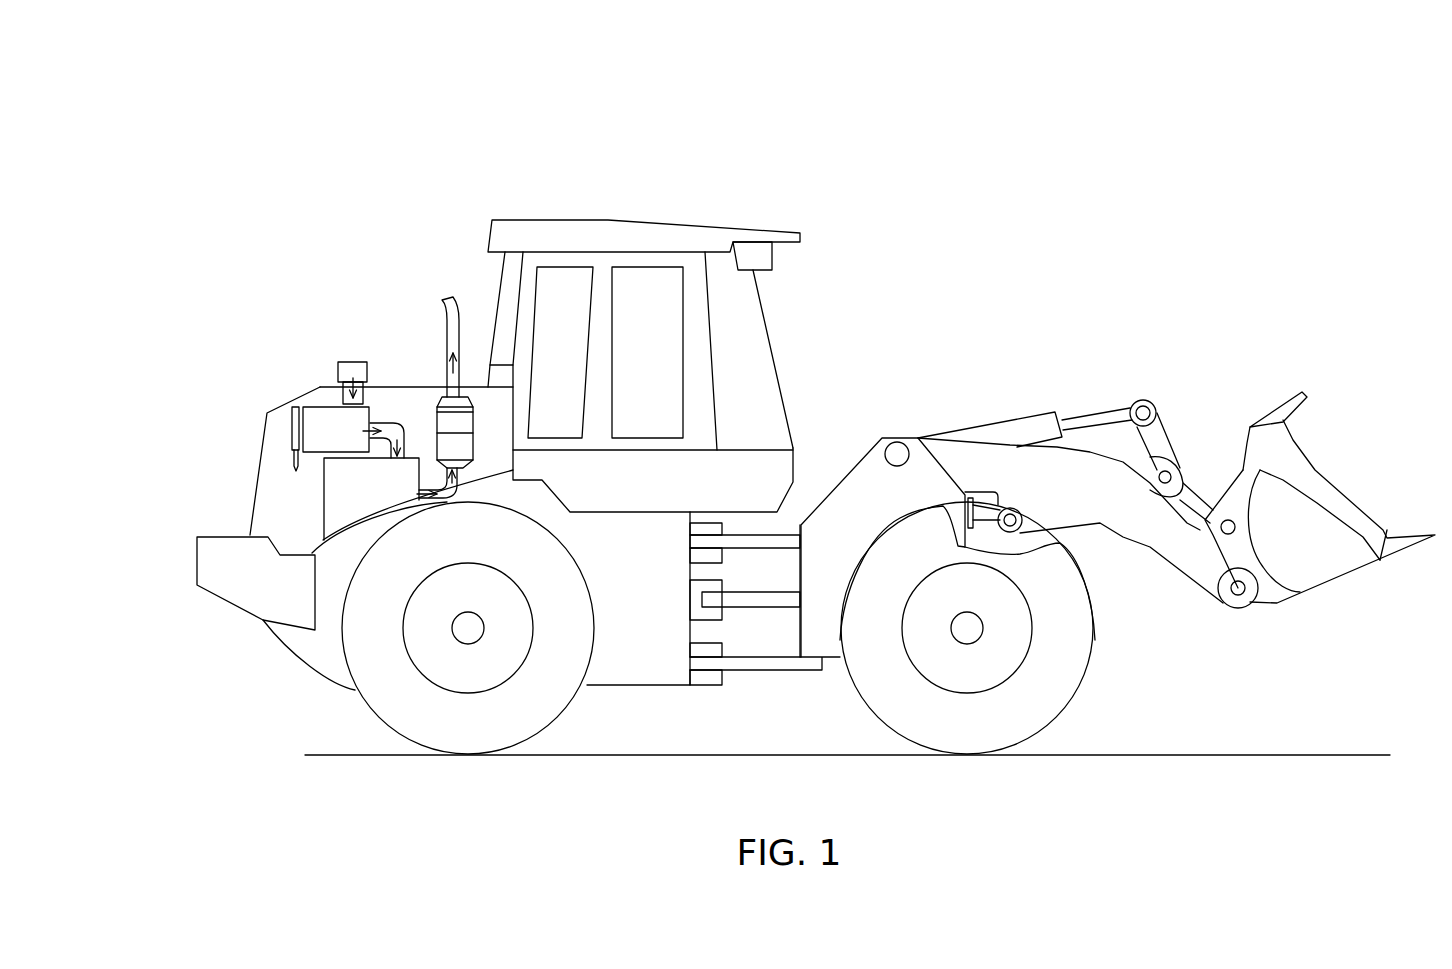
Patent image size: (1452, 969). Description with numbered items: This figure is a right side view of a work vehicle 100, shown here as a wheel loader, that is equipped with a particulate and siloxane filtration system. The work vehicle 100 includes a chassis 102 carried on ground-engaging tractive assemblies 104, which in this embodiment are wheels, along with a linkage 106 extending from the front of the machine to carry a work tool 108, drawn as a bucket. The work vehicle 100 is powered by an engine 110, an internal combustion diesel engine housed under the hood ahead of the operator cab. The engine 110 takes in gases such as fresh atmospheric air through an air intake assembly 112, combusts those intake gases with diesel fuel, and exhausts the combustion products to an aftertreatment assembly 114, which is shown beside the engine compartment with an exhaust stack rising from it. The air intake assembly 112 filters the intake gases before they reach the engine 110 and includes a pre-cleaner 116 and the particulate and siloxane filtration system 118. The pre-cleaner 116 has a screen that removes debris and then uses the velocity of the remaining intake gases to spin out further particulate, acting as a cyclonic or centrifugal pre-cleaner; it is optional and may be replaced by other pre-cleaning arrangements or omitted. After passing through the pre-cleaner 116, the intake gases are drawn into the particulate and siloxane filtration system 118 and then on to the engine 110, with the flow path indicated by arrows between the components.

The work vehicle 100 is at (386, 108).
The chassis 102 is at (178, 534).
The ground-engaging tractive assemblies 104 is at (440, 722).
The linkage 106 is at (1040, 370).
The work tool 108 is at (1270, 437).
The engine 110 is at (347, 498).
The air intake assembly 112 is at (330, 366).
The aftertreatment assembly 114 is at (432, 393).
The pre-cleaner 116 is at (361, 365).
The particulate and siloxane filtration system 118 is at (320, 415).